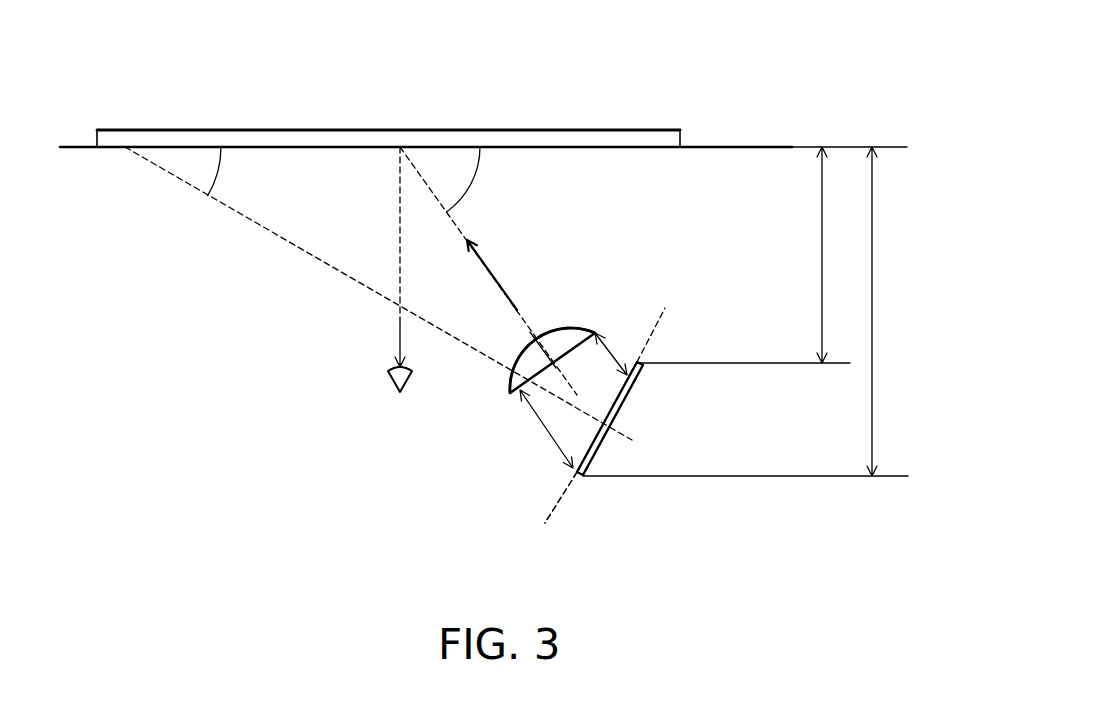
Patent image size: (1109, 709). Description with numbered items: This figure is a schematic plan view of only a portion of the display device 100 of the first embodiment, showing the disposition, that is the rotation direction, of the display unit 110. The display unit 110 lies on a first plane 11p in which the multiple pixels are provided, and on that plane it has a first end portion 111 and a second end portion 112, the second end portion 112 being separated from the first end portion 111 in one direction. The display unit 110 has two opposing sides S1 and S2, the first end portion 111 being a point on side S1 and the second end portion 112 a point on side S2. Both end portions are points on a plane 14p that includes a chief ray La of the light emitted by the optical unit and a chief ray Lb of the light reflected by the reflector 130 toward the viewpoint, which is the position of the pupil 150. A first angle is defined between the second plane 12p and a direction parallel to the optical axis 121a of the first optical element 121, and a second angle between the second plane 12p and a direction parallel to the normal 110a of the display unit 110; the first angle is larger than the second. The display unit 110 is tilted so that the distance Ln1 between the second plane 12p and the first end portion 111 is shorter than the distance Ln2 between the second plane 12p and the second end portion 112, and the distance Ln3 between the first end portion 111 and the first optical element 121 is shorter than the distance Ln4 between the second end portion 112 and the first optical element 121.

The display device 100 is at (821, 82).
The second plane 12p is at (728, 147).
The reflector 130 is at (610, 137).
The plane 14p is at (417, 206).
The chief ray La is at (485, 272).
The chief ray Lb is at (398, 338).
The pupil 150 is at (393, 383).
The first optical element 121 is at (567, 323).
The optical axis 121a is at (537, 333).
The display unit 110 is at (598, 448).
The first end portion 111 is at (640, 360).
The second end portion 112 is at (578, 478).
The side S1 is at (640, 363).
The side S2 is at (573, 473).
The normal 110a is at (625, 438).
The first plane 11p is at (560, 498).
The distance Ln1 is at (743, 255).
The distance Ln2 is at (757, 311).
The distance Ln3 is at (613, 345).
The distance Ln4 is at (550, 425).